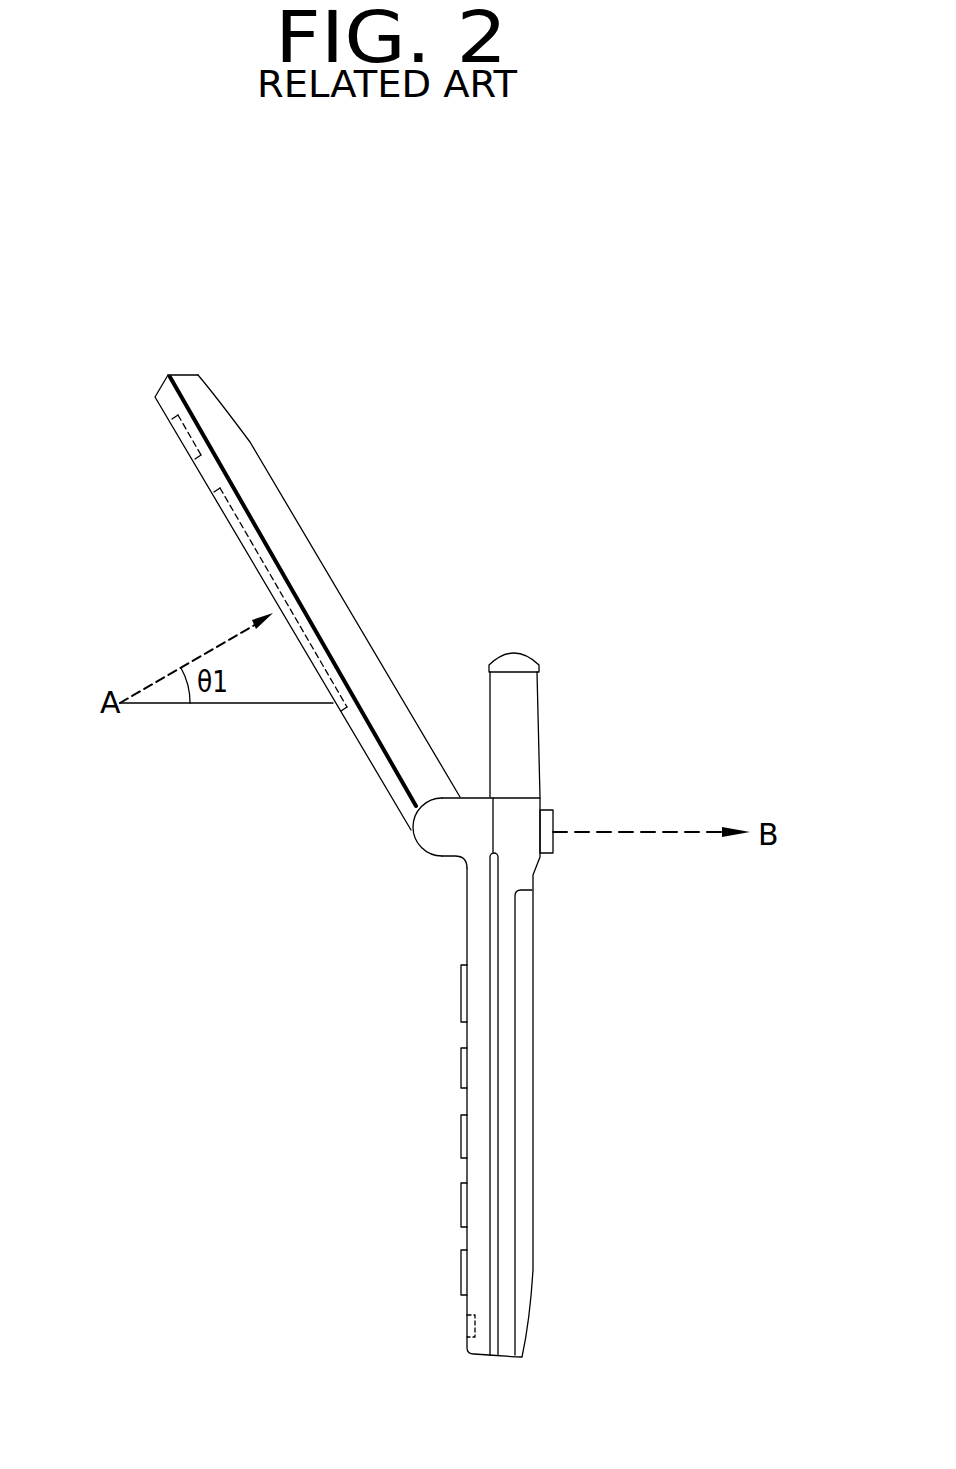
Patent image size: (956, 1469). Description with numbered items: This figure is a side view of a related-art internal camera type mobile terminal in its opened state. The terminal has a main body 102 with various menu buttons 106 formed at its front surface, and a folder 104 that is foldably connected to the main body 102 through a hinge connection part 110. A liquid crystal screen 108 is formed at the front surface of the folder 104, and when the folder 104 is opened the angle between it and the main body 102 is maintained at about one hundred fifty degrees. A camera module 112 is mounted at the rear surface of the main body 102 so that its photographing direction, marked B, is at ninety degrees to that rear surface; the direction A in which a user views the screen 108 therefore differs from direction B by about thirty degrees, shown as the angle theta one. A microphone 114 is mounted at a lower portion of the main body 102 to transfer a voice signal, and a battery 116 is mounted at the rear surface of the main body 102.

The main body 102 is at (477, 1170).
The folder 104 is at (306, 553).
The menu buttons 106 is at (461, 1068).
The liquid crystal screen 108 is at (237, 517).
The hinge connection part 110 is at (442, 837).
The camera module 112 is at (550, 810).
The microphone 114 is at (467, 1317).
The battery 116 is at (527, 1093).